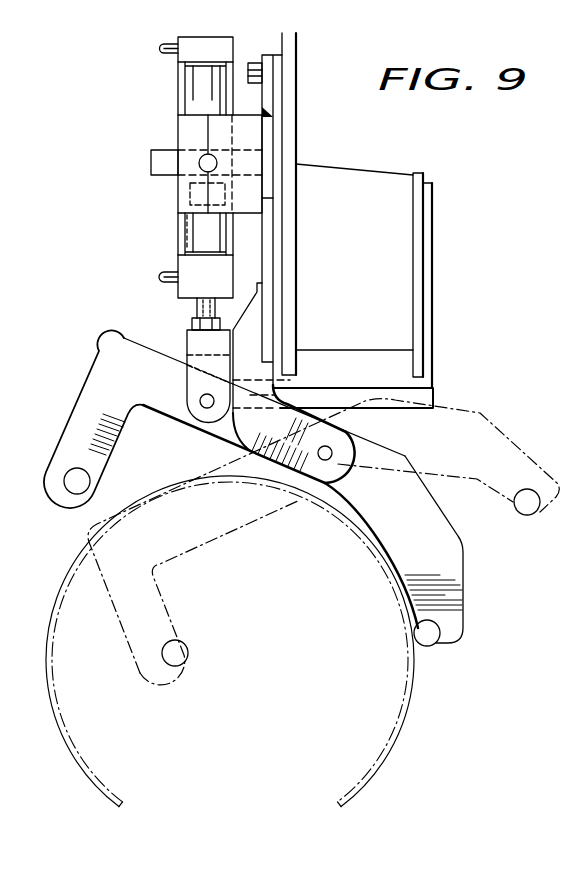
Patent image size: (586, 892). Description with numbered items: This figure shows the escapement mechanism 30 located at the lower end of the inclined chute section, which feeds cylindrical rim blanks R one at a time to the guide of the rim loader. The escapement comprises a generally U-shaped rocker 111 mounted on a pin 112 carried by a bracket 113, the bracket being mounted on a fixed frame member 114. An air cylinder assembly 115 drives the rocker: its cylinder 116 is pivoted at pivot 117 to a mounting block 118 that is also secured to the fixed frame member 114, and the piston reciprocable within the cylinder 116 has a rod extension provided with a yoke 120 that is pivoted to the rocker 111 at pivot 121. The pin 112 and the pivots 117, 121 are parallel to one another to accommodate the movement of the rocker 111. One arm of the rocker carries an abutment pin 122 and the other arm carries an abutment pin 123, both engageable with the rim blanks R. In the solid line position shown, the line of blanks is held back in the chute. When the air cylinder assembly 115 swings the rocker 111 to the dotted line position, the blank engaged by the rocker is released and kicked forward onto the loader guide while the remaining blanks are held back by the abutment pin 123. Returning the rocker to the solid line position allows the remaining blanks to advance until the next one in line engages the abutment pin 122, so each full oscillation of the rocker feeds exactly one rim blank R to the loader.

The escapement mechanism 30 is at (116, 258).
The cylinder 116 is at (183, 82).
The air cylinder assembly 115 is at (196, 101).
The mounting block 118 is at (189, 164).
The pivot 117 is at (203, 168).
The yoke 120 is at (197, 347).
The pivot 121 is at (204, 406).
The bracket 113 is at (257, 318).
The fixed frame member 114 is at (382, 183).
The pin 112 is at (332, 451).
The rocker 111 is at (110, 343).
The abutment pin 123 is at (74, 485).
The abutment pin 122 is at (427, 640).
The rim blank R is at (406, 720).